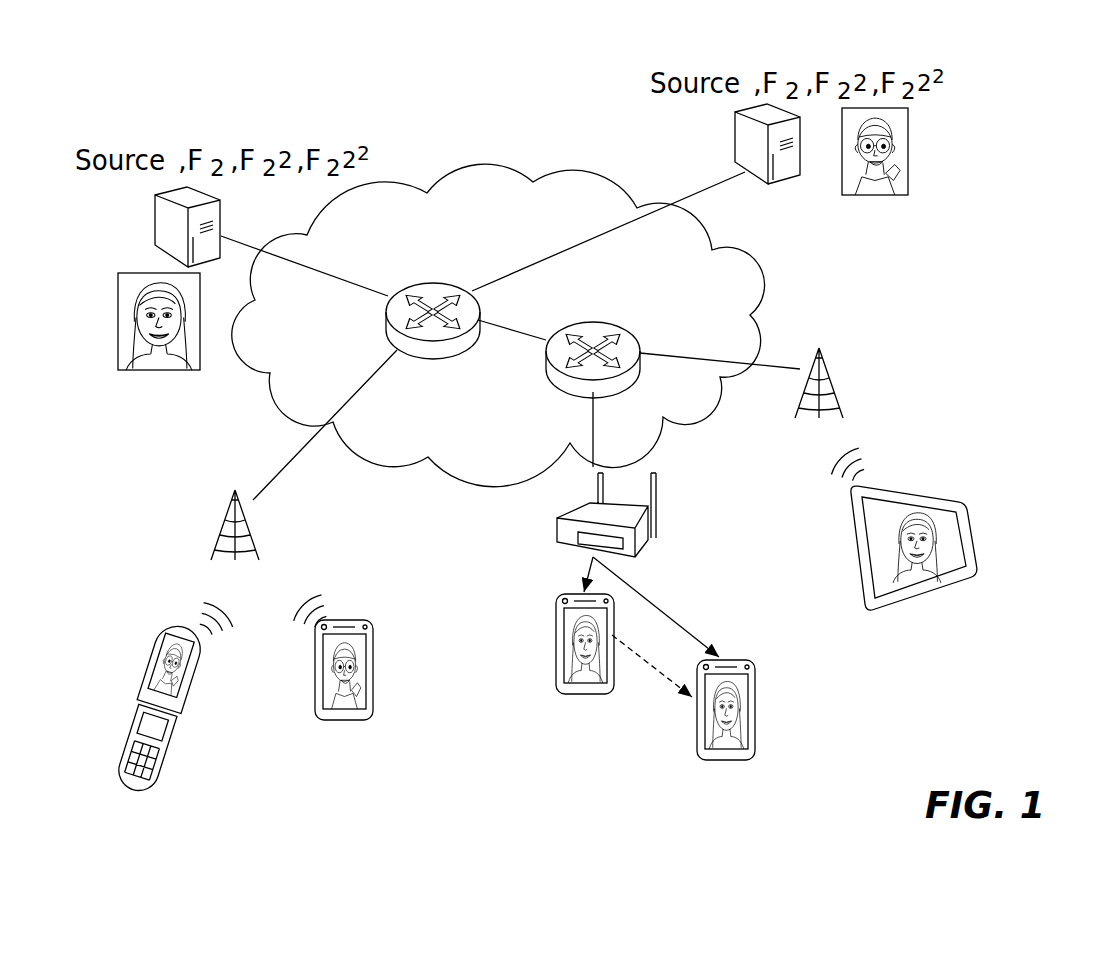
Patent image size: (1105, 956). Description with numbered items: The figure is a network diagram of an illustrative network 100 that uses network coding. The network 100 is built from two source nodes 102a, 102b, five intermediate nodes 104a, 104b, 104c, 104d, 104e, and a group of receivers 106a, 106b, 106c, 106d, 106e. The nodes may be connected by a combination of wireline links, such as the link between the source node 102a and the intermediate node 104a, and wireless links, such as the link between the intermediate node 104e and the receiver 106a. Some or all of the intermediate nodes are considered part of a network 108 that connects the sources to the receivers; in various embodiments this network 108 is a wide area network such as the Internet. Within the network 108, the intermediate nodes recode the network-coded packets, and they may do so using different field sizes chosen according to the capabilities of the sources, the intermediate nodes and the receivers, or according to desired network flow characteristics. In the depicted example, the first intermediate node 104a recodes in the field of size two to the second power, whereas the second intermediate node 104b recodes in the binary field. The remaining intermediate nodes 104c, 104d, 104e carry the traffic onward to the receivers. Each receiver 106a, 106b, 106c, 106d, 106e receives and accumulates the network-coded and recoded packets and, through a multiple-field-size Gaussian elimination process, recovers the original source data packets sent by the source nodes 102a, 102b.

The network 100 is at (976, 85).
The source node 102a is at (740, 133).
The source node 102b is at (165, 220).
The first intermediate node 104a is at (432, 362).
The second intermediate node 104b is at (550, 383).
The intermediate node 104c is at (830, 383).
The intermediate node 104d is at (607, 515).
The intermediate node 104e is at (223, 525).
The receiver 106a is at (145, 692).
The receiver 106b is at (378, 686).
The receiver 106c is at (560, 686).
The receiver 106d is at (758, 738).
The tablet client device 106e is at (912, 600).
The network 108 is at (550, 221).